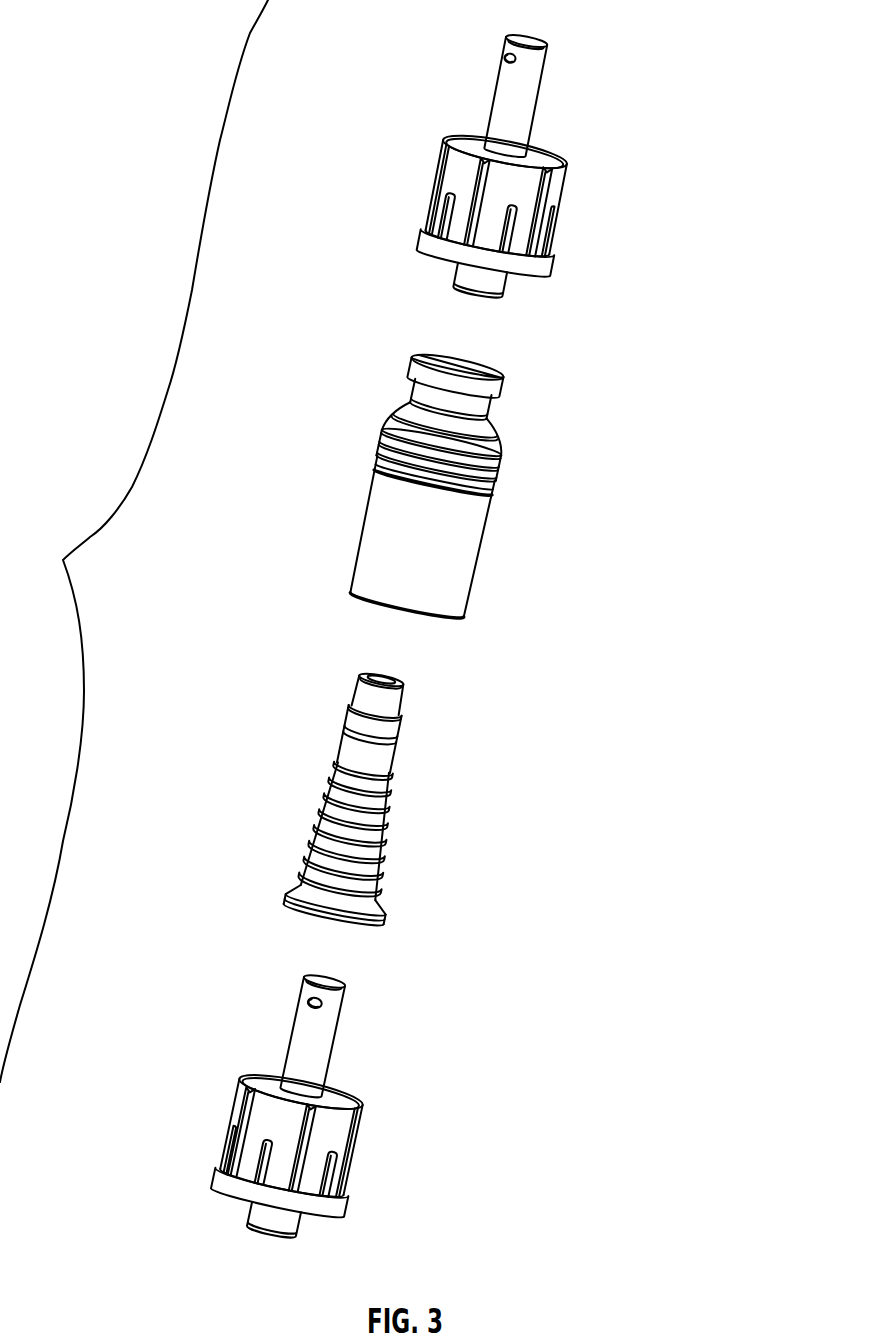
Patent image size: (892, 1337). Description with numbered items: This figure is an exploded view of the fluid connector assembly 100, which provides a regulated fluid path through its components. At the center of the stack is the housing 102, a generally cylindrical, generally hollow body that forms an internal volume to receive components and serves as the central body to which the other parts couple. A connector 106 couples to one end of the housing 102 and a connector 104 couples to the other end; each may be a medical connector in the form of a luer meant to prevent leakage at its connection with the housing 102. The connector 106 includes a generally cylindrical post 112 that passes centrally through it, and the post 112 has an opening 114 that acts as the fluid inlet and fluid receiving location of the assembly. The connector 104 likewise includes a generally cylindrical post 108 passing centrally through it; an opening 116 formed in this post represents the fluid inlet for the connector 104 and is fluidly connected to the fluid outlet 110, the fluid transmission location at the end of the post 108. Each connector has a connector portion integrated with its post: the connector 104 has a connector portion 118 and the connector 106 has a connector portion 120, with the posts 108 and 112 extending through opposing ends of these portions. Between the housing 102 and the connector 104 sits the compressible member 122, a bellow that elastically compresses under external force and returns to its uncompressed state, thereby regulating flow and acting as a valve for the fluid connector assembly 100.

The fluid connector assembly 100 is at (403, 43).
The housing 102 is at (370, 483).
The connector 104 is at (385, 1049).
The connector 106 is at (587, 97).
The post 108 is at (283, 1058).
The fluid outlet 110 is at (268, 1243).
The post 112 is at (490, 117).
The opening 114 is at (505, 58).
The opening 116 is at (305, 998).
The connector portion 118 is at (220, 1158).
The connector portion 120 is at (425, 212).
The compressible member 122 is at (340, 741).